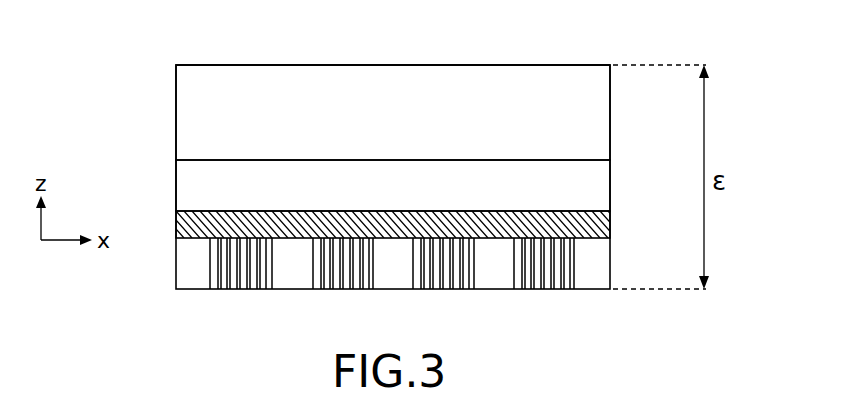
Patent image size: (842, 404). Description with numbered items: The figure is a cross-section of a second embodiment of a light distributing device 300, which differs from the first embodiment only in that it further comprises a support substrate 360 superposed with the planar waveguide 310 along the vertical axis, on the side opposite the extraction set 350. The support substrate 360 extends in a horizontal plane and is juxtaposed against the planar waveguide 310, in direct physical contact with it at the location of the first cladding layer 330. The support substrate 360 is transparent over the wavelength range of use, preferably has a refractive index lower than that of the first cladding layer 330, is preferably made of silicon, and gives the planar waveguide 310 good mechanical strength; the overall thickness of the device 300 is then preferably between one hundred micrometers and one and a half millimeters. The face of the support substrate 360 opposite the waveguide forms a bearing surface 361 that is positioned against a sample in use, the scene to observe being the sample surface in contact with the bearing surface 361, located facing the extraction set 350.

The light distributing device 300 is at (129, 101).
The support substrate 360 is at (602, 120).
The bearing surface 361 is at (438, 65).
The first cladding layer 330 is at (186, 184).
The planar waveguide 310 is at (620, 160).
The extraction set 350 is at (573, 300).